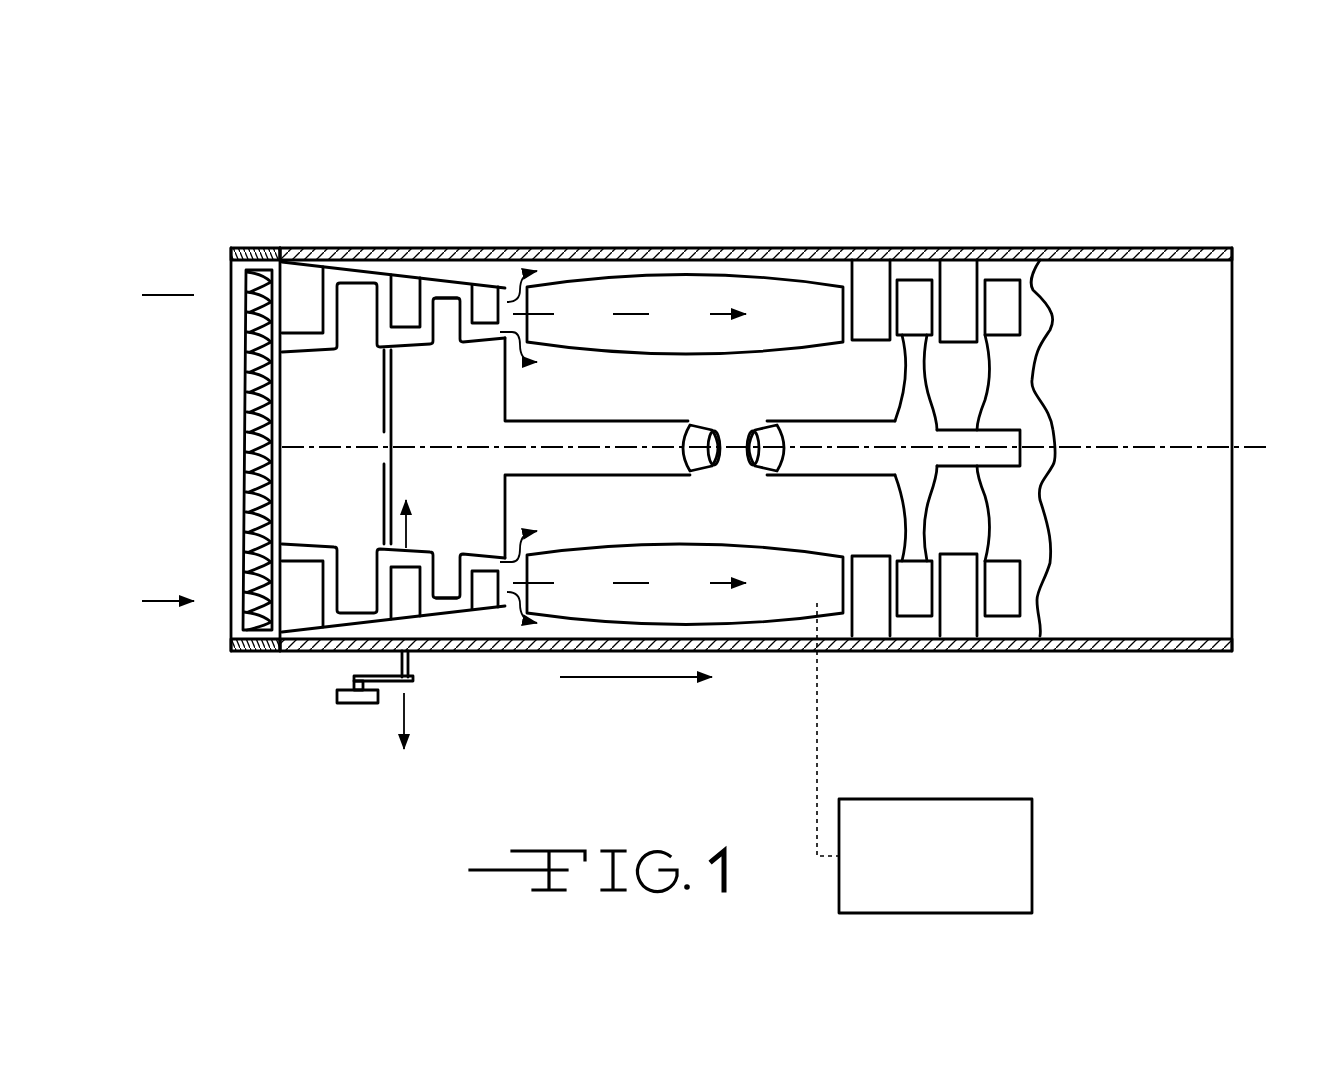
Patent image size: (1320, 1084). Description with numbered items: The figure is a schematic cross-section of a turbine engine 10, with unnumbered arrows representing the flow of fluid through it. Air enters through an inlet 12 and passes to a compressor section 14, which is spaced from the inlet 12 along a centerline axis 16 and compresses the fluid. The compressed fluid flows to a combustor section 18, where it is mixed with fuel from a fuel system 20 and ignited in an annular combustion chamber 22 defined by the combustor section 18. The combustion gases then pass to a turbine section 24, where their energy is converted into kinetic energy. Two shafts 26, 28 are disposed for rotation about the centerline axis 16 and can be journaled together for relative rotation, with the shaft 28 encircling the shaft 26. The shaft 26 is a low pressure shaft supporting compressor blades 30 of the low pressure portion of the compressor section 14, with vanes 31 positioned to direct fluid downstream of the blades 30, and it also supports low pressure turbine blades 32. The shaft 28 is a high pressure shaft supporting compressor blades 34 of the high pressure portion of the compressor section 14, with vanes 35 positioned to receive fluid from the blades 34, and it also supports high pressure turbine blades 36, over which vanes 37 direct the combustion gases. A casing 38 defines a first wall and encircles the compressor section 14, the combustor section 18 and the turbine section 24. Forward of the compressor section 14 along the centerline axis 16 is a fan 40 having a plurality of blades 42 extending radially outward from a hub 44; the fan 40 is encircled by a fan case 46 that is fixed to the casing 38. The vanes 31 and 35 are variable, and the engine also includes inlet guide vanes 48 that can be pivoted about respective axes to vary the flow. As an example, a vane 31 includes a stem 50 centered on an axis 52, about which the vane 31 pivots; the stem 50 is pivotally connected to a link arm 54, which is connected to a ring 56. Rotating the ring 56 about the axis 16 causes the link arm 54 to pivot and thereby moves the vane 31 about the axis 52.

The turbine engine 10 is at (1182, 146).
The inlet 12 is at (228, 355).
The compressor section 14 is at (346, 772).
The centerline axis 16 is at (1240, 447).
The combustor section 18 is at (785, 668).
The fuel system 20 is at (913, 863).
The annular combustion chamber 22 is at (797, 333).
The turbine section 24 is at (930, 670).
The shaft 26 is at (315, 412).
The shaft 28 is at (588, 430).
The compressor blades 30 is at (357, 297).
The vanes 31 is at (407, 293).
The low pressure turbine blades 32 is at (998, 310).
The compressor blades 34 is at (450, 300).
The vanes 35 is at (495, 300).
The high pressure turbine blades 36 is at (920, 308).
The vanes 37 is at (868, 290).
The casing 38 is at (858, 222).
The fan 40 is at (213, 263).
The blades 42 is at (247, 515).
The hub 44 is at (240, 513).
The fan case 46 is at (248, 248).
The inlet guide vanes 48 is at (298, 288).
The stem 50 is at (425, 686).
The axis 52 is at (408, 523).
The link arm 54 is at (377, 673).
The ring 56 is at (347, 700).